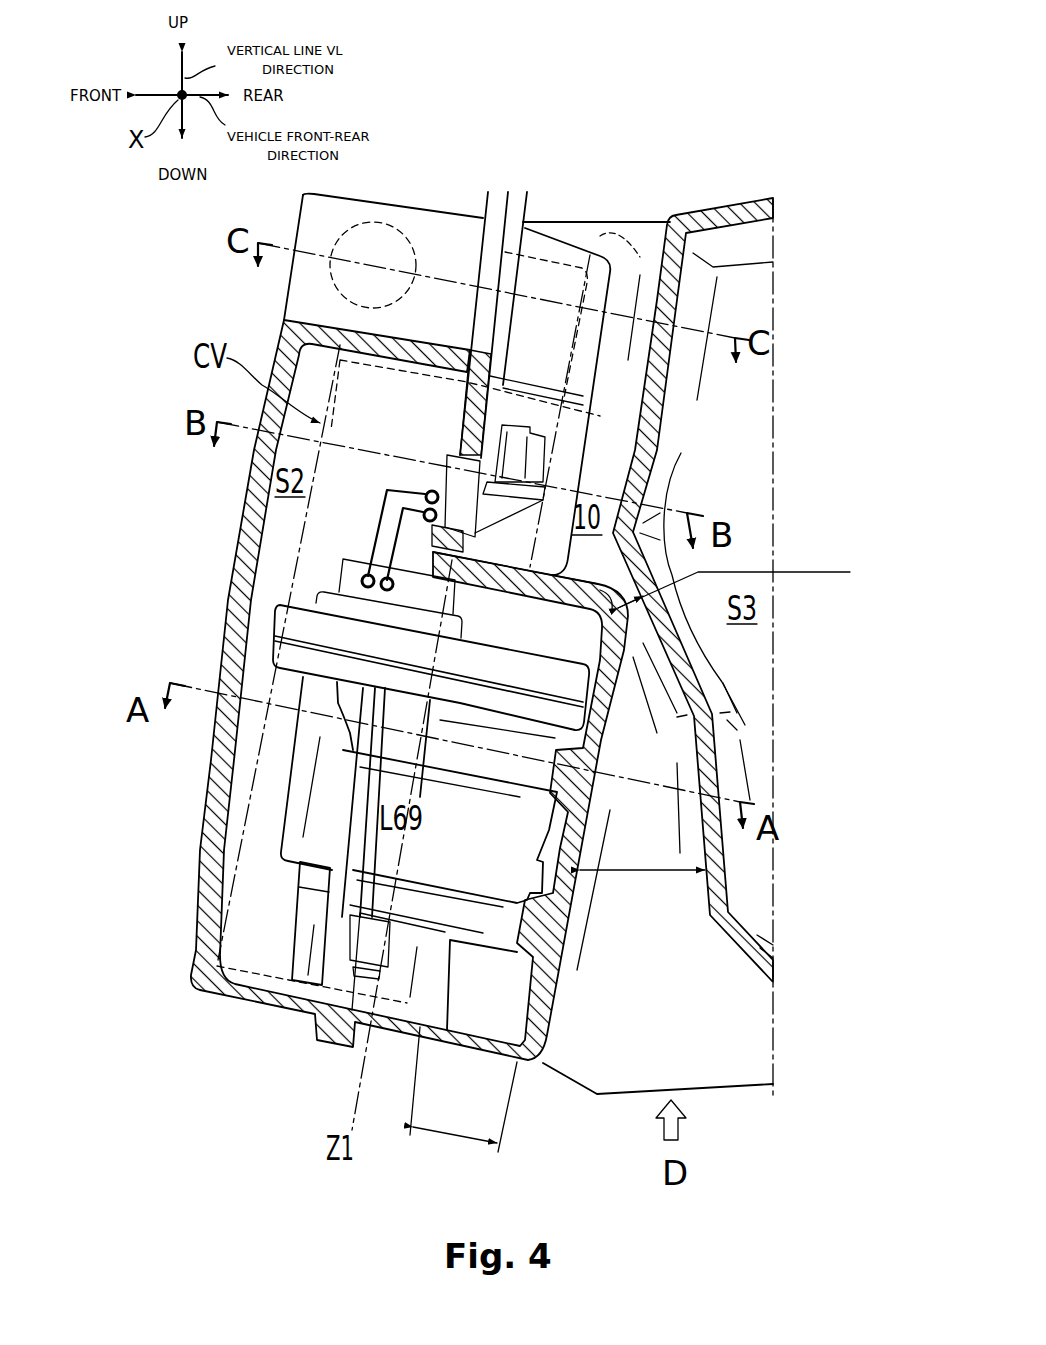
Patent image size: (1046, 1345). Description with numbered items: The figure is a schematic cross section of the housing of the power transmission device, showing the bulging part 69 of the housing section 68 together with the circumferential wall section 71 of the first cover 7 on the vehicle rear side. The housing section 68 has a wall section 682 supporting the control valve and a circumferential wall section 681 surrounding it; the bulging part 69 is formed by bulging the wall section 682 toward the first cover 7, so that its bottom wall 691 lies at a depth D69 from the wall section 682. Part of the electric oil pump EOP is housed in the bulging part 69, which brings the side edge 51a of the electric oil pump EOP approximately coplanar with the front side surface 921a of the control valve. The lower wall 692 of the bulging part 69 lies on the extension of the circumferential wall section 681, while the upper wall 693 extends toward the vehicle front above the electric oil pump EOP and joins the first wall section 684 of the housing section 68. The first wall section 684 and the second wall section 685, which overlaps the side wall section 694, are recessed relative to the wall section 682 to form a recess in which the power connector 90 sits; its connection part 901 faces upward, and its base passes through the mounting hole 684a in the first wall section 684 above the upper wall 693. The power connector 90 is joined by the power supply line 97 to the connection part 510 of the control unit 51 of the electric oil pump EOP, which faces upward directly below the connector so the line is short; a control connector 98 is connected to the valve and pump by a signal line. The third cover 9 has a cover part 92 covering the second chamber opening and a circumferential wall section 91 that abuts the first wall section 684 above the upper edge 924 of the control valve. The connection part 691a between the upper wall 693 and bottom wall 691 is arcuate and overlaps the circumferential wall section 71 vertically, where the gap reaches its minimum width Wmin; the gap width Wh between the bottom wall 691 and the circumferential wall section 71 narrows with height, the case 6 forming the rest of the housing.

The third cover 9 is at (487, 188).
The case 6 is at (535, 188).
The first cover 7 is at (723, 200).
The housing section 68 is at (571, 236).
The wall section 682 is at (616, 258).
The control connector 98 is at (397, 222).
The circumferential wall section 91 is at (333, 337).
The upper edge 924 is at (407, 351).
The second wall section 685 is at (554, 422).
The first wall section 684 is at (467, 400).
The mounting hole 684a is at (447, 457).
The connection part 901 is at (556, 468).
The power connector 90 is at (681, 456).
The cover part 92 is at (238, 516).
The power supply line 97 is at (380, 510).
The connection part 510 is at (343, 566).
The front side surface 921a is at (300, 570).
The side edge 51a is at (272, 616).
The control unit 51 is at (268, 655).
The upper wall 693 is at (492, 572).
The connection part 691a is at (614, 614).
The circumferential wall section 71 is at (687, 648).
The bottom wall 691 is at (584, 832).
The bulging part 69 is at (484, 991).
The side wall section 694 is at (533, 999).
The circumferential wall section 681 is at (391, 1027).
The lower wall 692 is at (470, 1042).
The minimum width Wmin is at (734, 572).
The gap width Wh is at (642, 838).
The depth D69 is at (463, 1105).
The electric oil pump EOP is at (273, 867).